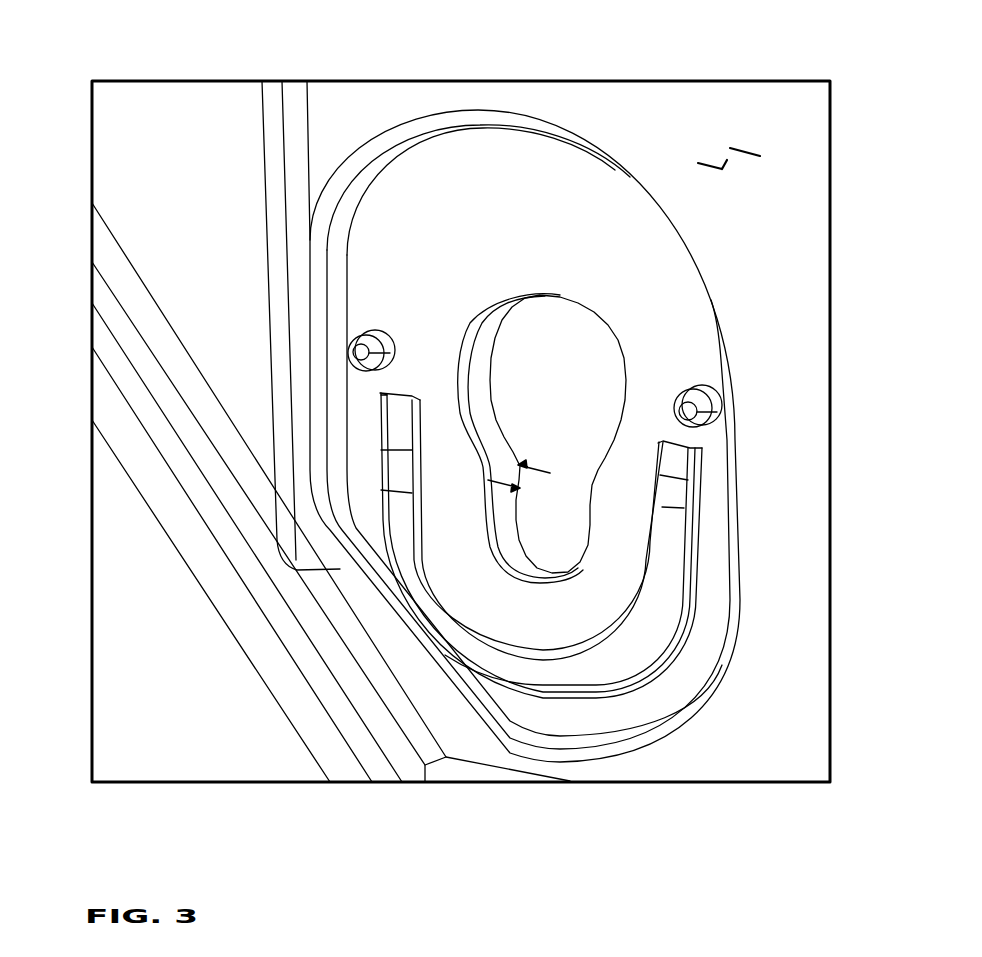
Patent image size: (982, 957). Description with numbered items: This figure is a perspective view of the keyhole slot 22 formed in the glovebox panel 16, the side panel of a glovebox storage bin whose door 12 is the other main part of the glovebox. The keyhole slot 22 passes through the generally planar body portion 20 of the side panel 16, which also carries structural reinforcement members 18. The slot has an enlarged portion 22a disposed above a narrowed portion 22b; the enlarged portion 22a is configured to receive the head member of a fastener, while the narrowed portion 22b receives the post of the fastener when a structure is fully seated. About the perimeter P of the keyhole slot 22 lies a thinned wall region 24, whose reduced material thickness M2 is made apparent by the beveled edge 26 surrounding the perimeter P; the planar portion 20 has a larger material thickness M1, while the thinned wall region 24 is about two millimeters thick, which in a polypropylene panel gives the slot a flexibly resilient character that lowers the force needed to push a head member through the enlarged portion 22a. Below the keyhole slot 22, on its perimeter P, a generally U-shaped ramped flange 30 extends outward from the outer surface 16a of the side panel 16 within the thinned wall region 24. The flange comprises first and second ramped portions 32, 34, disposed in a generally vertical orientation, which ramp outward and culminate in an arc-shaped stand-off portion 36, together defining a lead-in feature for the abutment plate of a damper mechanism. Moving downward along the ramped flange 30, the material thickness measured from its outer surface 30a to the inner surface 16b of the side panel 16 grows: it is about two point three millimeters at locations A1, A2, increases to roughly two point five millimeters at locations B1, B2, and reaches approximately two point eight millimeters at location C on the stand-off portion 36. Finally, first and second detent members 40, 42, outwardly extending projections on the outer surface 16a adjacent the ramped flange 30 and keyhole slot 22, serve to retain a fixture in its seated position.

The door 12 is at (147, 540).
The glovebox panel 16 is at (780, 187).
The outer surface 16a is at (578, 232).
The inner surface 16b is at (498, 405).
The structural reinforcement members 18 is at (270, 137).
The generally planar body portion 20 is at (730, 250).
The keyhole slot 22 is at (543, 327).
The enlarged portion 22a is at (593, 367).
The narrowed portion 22b is at (640, 523).
The thinned wall region 24 is at (457, 180).
The beveled edge 26 is at (360, 173).
The ramped flange 30 is at (703, 597).
The outer surface 30a is at (490, 667).
The first ramped portion 32 is at (396, 458).
The second ramped portion 34 is at (687, 457).
The stand-off portion 36 is at (560, 683).
The first detent member 40 is at (357, 350).
The second detent member 42 is at (700, 382).
The location A1 is at (398, 553).
The location A2 is at (670, 493).
The location B1 is at (410, 605).
The location B2 is at (670, 563).
The location C is at (538, 675).
The perimeter P is at (610, 605).
The material thickness M1 is at (730, 172).
The material thickness M2 is at (523, 472).